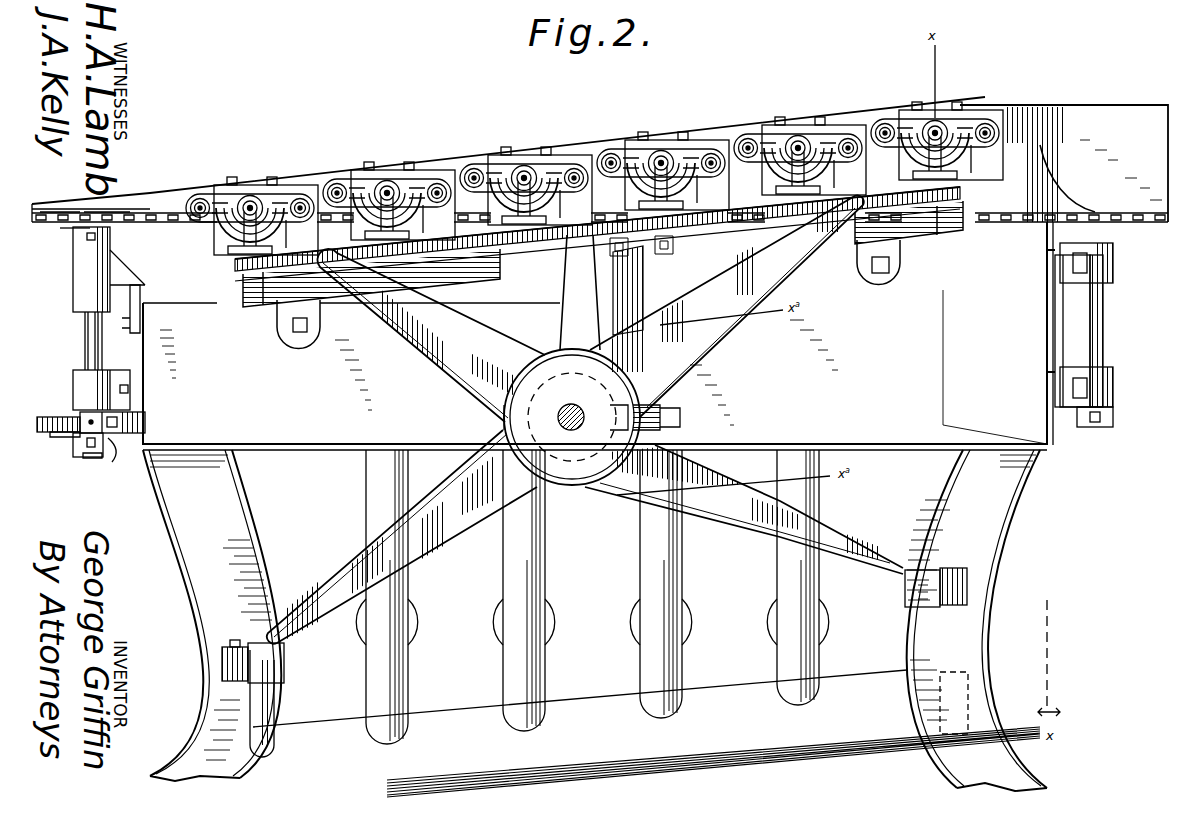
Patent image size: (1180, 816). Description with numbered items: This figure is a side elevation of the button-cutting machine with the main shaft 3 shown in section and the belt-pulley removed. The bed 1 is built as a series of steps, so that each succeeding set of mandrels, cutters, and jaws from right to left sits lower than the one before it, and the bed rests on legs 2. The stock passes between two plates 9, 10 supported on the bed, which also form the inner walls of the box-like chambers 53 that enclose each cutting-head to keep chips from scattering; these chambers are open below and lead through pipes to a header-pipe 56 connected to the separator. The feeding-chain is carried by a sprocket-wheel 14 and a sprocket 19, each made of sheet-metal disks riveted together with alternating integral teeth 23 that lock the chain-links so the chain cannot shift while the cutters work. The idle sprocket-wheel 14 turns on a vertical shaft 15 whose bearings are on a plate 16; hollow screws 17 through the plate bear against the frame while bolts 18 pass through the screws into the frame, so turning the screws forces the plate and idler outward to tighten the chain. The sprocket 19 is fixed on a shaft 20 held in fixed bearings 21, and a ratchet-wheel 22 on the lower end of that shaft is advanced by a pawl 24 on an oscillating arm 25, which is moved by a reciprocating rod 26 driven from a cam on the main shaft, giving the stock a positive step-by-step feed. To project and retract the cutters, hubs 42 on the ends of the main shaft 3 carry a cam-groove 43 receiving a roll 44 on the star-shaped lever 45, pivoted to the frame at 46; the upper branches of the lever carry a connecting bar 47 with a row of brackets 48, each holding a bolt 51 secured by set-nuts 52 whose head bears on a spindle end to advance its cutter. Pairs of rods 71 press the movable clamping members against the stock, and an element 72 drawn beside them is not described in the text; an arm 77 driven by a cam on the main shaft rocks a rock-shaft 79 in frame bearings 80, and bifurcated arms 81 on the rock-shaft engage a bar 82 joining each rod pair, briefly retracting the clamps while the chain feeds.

The bed 1 is at (595, 344).
The legs 2 is at (595, 620).
The main shaft 3 is at (563, 425).
The plate 9 is at (183, 196).
The plate 10 is at (1064, 163).
The sprocket-wheel 14 is at (1097, 215).
The vertical shaft 15 is at (1105, 322).
The plate 16 is at (1078, 320).
The hollow screws 17 is at (1050, 253).
The bolts 18 is at (1088, 266).
The sprocket 19 is at (62, 212).
The shaft 20 is at (86, 338).
The fixed bearings 21 is at (75, 300).
The ratchet-wheel 22 is at (40, 428).
The teeth 23 is at (96, 210).
The pawl 24 is at (80, 450).
The arm 25 is at (116, 460).
The reciprocating rod 26 is at (142, 424).
The hubs 42 is at (572, 417).
The cam-groove 43 is at (503, 418).
The roll 44 is at (617, 428).
The lever 45 is at (585, 419).
The pivot 46 is at (260, 631).
The connecting bar 47 is at (597, 229).
The brackets 48 is at (238, 252).
The bolt 51 is at (252, 194).
The set-nuts 52 is at (247, 200).
The box-like chamber 53 is at (375, 486).
The header-pipe 56 is at (646, 733).
The rods 71 is at (200, 197).
The roller link arm 72 is at (475, 166).
The arm 77 is at (643, 284).
The rock-shaft 79 is at (457, 284).
The bearings 80 is at (290, 318).
The arms 81 is at (252, 315).
The bar 82 is at (389, 178).